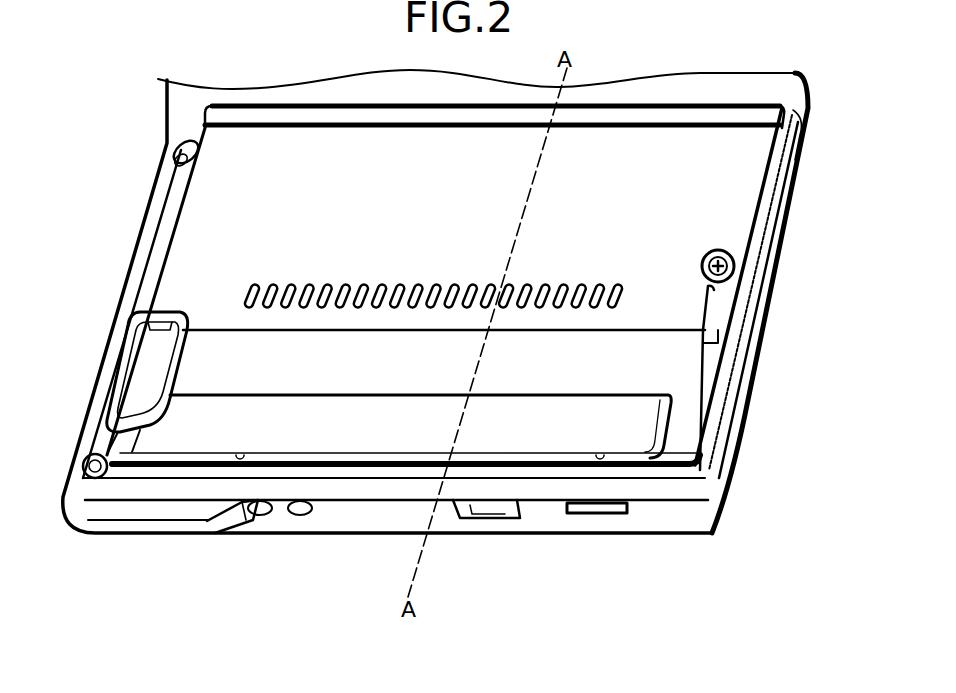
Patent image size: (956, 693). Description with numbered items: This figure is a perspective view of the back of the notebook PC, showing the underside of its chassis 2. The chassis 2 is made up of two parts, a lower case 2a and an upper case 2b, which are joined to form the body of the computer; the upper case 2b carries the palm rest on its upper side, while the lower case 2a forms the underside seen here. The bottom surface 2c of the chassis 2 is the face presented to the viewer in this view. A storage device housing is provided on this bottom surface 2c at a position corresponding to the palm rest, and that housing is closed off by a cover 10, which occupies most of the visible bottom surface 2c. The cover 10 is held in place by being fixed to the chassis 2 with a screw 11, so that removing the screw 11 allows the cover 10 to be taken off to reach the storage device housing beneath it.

The chassis 2 is at (147, 510).
The lower case 2a is at (197, 512).
The upper case 2b is at (232, 538).
The bottom surface 2c is at (160, 226).
The cover 10 is at (393, 422).
The screw 11 is at (716, 252).